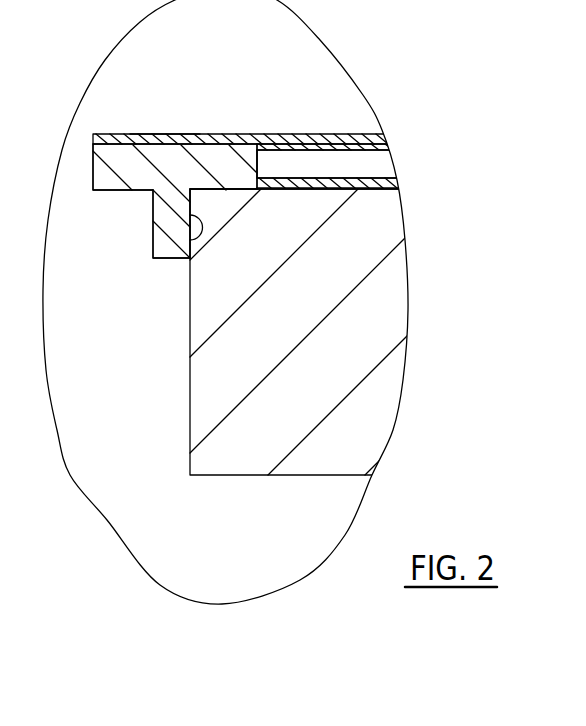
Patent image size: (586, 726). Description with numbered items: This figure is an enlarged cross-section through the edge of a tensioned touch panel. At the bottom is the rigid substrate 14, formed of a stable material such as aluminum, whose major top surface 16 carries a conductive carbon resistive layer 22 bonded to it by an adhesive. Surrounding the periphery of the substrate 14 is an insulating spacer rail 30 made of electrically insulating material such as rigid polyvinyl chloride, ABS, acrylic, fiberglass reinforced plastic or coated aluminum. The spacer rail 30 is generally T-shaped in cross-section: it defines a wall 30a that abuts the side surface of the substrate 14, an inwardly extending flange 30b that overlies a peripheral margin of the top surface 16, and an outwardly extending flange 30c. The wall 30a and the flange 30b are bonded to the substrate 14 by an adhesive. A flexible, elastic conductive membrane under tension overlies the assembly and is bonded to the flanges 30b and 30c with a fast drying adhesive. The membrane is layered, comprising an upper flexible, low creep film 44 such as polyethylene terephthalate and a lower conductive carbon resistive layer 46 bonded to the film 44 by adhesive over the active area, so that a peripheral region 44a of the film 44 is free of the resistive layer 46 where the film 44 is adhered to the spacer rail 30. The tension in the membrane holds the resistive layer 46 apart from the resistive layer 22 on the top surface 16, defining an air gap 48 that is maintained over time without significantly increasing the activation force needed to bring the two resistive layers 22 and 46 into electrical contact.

The substrate 14 is at (372, 312).
The major top surface 16 is at (376, 185).
The conductive carbon resistive layer 22 is at (393, 183).
The insulating spacer rail 30 is at (148, 226).
The wall 30a is at (180, 258).
The inwardly extending flange 30b is at (238, 150).
The outwardly extending flange 30c is at (105, 166).
The film 44 is at (311, 135).
The peripheral region of the film 44a is at (168, 142).
The conductive carbon resistive layer 46 is at (385, 148).
The air gap 48 is at (370, 167).